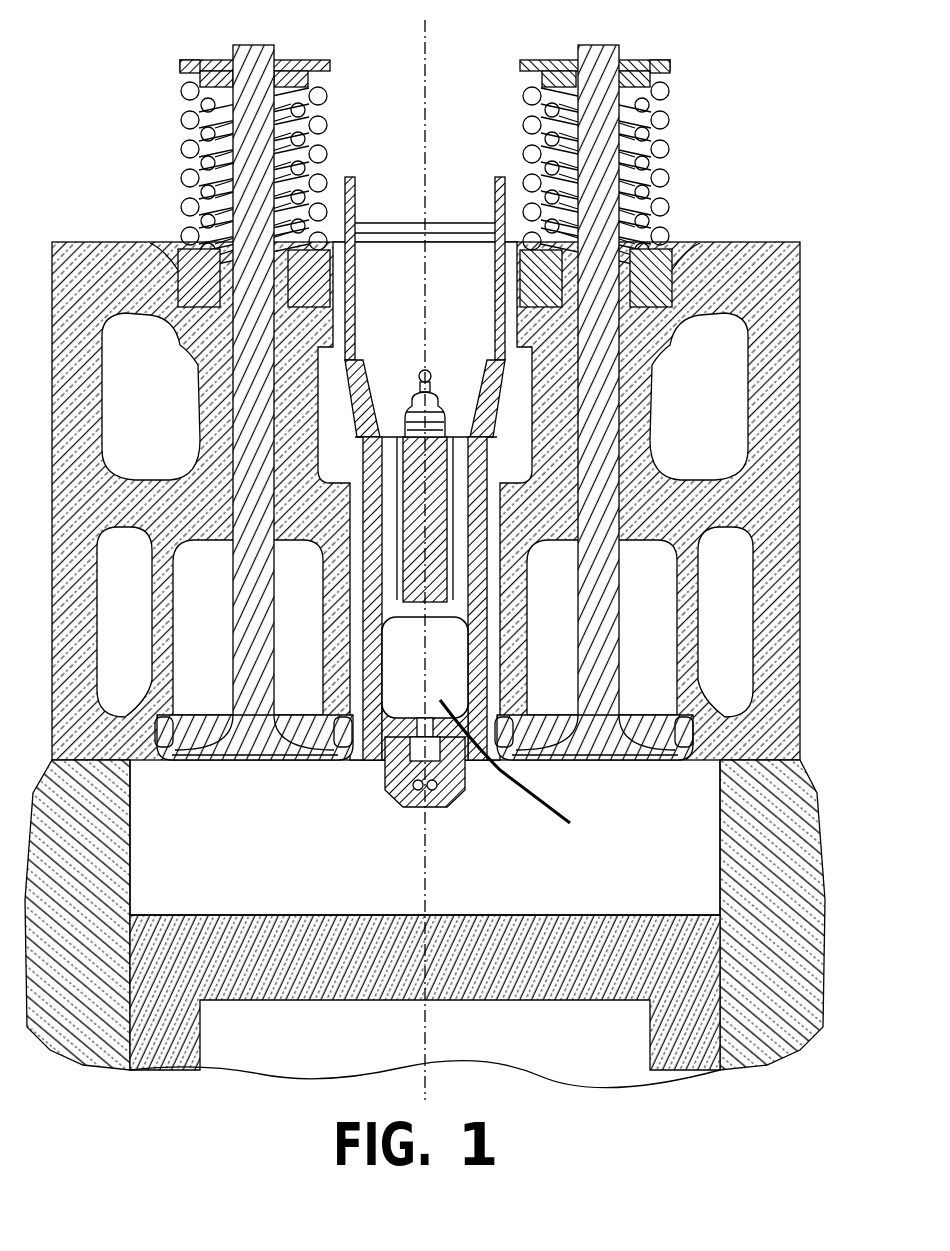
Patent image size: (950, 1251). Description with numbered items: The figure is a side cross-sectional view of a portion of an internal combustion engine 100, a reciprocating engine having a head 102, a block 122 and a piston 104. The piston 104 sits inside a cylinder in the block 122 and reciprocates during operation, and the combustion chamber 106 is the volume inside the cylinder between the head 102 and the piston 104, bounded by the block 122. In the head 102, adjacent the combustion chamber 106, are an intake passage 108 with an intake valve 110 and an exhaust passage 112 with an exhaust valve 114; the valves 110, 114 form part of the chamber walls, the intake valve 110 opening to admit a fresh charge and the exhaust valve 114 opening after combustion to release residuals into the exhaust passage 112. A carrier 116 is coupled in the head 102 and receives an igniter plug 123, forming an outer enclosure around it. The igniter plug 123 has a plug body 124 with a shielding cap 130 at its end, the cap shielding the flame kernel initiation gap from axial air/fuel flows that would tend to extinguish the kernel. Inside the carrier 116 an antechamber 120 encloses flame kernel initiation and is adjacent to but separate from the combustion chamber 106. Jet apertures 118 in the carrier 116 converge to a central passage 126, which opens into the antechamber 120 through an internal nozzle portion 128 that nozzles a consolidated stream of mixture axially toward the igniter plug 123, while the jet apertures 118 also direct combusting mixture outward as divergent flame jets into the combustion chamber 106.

The internal combustion engine 100 is at (95, 42).
The head 102 is at (118, 242).
The piston 104 is at (395, 972).
The combustion chamber 106 is at (402, 858).
The intake passage 108 is at (226, 637).
The intake valve 110 is at (262, 763).
The exhaust passage 112 is at (662, 637).
The exhaust valve 114 is at (595, 763).
The carrier 116 is at (503, 550).
The jet apertures 118 is at (410, 790).
The antechamber 120 is at (470, 740).
The block 122 is at (95, 926).
The igniter plug 123 is at (392, 380).
The plug body 124 is at (445, 600).
The central passage 126 is at (415, 737).
The internal nozzle portion 128 is at (518, 776).
The shielding cap 130 is at (437, 650).